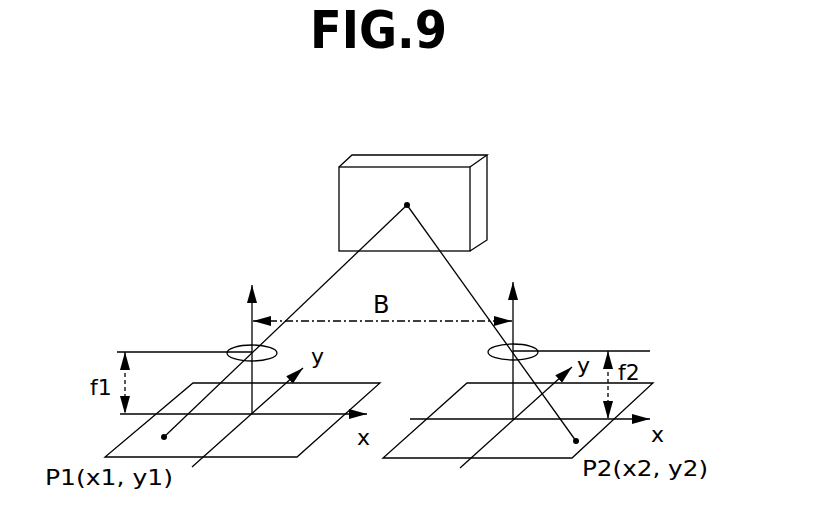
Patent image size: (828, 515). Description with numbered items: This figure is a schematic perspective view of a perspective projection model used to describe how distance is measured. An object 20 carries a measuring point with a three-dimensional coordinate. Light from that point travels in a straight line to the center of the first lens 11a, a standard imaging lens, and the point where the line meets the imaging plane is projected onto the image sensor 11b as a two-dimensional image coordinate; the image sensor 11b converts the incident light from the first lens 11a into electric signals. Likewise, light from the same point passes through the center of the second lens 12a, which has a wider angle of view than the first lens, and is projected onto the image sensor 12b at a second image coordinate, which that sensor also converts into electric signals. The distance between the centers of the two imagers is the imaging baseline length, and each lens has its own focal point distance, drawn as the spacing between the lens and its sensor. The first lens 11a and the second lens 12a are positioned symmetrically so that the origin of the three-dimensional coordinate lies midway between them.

The object 20 is at (458, 217).
The first lens 11a is at (235, 348).
The image sensor 11b is at (297, 442).
The second lens 12a is at (528, 347).
The image sensor 12b is at (525, 445).